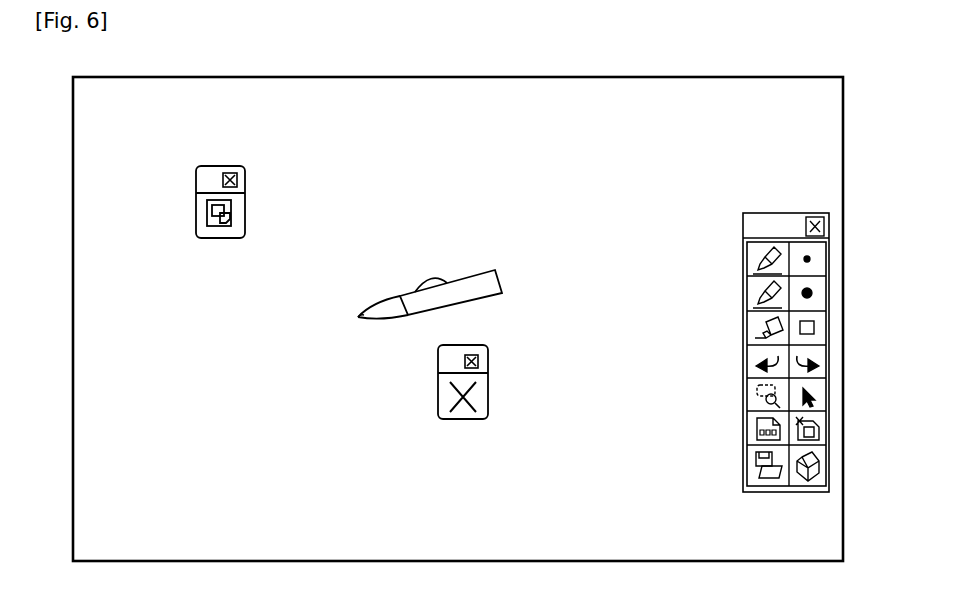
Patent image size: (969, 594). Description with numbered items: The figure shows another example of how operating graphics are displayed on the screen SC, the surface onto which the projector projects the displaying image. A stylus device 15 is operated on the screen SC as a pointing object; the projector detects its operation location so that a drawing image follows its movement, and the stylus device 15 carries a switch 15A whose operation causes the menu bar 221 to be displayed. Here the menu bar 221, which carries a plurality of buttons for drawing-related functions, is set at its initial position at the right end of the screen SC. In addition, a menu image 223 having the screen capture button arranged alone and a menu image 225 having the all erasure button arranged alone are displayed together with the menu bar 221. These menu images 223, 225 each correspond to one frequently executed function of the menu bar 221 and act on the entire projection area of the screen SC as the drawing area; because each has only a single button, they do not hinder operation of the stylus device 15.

The screen SC is at (827, 142).
The menu image 223 is at (240, 201).
The stylus device 15 is at (500, 280).
The switch 15A is at (432, 277).
The menu image 225 is at (489, 391).
The menu bar 221 is at (783, 213).